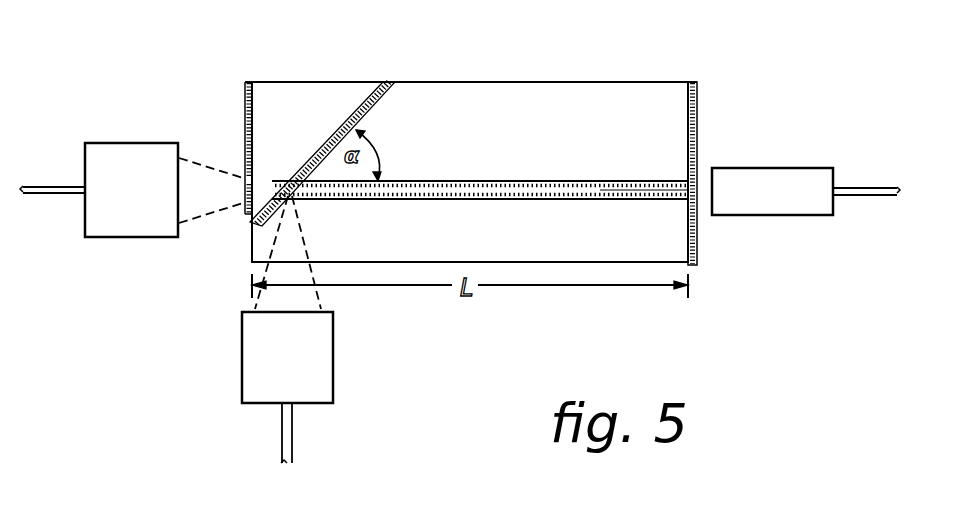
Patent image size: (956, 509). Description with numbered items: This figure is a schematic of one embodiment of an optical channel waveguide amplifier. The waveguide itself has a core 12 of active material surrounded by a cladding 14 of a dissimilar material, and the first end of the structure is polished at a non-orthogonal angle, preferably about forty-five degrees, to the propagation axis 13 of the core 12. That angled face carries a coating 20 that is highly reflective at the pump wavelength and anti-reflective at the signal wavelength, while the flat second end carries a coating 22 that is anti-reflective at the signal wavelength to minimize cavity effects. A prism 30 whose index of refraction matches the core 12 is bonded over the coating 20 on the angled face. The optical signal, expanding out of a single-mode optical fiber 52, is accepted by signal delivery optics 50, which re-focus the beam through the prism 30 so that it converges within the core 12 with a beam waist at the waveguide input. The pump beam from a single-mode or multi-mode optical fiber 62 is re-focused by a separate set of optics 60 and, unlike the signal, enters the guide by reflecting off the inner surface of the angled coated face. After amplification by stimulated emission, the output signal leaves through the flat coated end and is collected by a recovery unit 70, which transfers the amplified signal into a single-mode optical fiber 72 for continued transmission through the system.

The core 12 is at (490, 183).
The propagation axis 13 is at (647, 183).
The cladding 14 is at (621, 144).
The coating 20 is at (385, 82).
The coating 22 is at (697, 228).
The prism 30 is at (302, 142).
The signal delivery optics 50 is at (152, 204).
The single-mode optical fiber 52 is at (47, 185).
The optics 60 is at (306, 364).
The optical fiber 62 is at (292, 432).
The recovery unit 70 is at (792, 205).
The single-mode optical fiber 72 is at (868, 187).